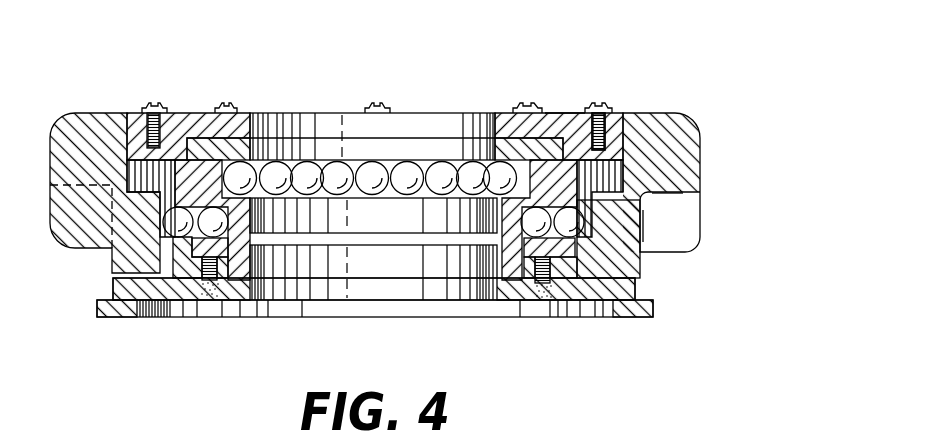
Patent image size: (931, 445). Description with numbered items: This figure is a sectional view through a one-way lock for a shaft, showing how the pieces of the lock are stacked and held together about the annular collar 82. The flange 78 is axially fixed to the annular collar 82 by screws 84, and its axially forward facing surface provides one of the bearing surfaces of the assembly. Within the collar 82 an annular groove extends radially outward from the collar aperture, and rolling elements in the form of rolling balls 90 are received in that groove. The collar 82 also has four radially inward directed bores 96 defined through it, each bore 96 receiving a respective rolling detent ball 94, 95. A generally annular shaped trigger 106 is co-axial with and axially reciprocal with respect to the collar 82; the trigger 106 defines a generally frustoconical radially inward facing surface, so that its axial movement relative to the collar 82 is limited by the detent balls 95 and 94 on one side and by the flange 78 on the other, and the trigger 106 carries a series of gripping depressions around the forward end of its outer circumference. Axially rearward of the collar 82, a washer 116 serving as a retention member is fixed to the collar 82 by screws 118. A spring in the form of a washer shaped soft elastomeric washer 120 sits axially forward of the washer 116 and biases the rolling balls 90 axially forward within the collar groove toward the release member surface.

The flange 78 is at (653, 308).
The annular collar 82 is at (580, 256).
The screws 84 is at (558, 300).
The rolling balls 90 is at (412, 160).
The detent ball 94 is at (168, 236).
The detent ball 95 is at (226, 236).
The radially inward directed bore 96 is at (192, 242).
The trigger 106 is at (703, 140).
The washer 116 is at (502, 113).
The screws 118 is at (556, 113).
The soft elastomeric washer 120 is at (560, 113).